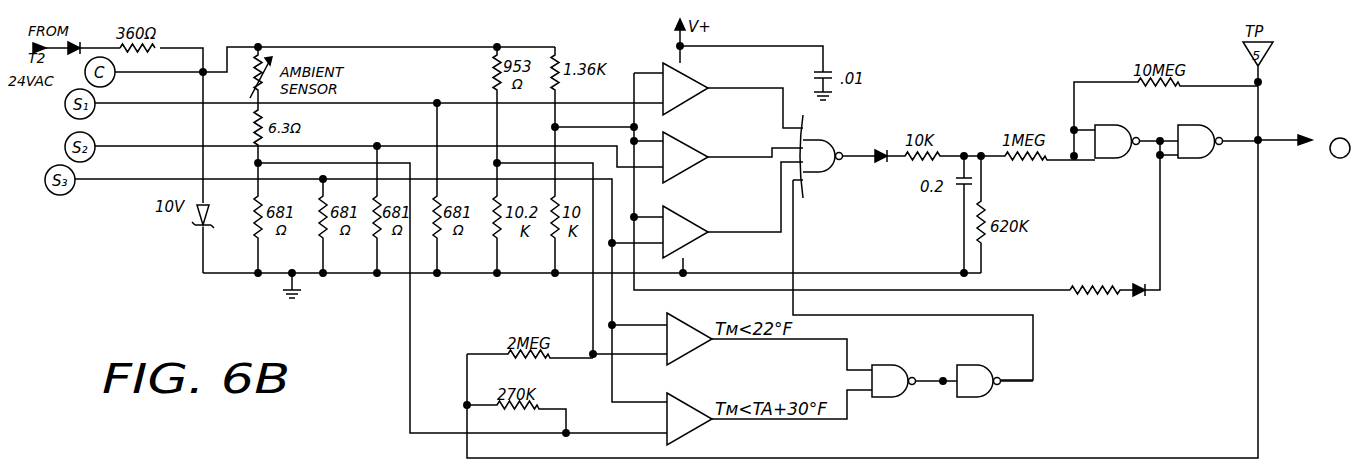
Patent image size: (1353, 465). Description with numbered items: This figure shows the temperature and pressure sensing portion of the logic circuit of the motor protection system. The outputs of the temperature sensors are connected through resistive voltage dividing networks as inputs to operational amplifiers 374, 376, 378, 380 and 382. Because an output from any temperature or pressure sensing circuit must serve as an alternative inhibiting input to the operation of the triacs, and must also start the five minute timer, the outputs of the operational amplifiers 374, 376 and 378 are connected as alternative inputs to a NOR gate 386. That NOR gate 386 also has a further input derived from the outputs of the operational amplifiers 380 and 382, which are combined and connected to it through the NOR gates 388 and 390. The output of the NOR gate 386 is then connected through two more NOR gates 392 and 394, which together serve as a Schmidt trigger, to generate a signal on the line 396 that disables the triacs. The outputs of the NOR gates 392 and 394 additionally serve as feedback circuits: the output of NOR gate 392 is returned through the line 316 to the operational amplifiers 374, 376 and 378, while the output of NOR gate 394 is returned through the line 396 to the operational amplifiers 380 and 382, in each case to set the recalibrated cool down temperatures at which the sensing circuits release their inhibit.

The operational amplifier 374 is at (688, 104).
The operational amplifier 376 is at (690, 172).
The operational amplifier 378 is at (693, 237).
The operational amplifier 380 is at (690, 352).
The operational amplifier 382 is at (692, 432).
The NOR gate 386 is at (830, 138).
The NOR gate 388 is at (895, 365).
The NOR gate 390 is at (975, 365).
The NOR gate 392 is at (1110, 160).
The NOR gate 394 is at (1200, 160).
The line 396 is at (1292, 142).
The line 316 is at (1160, 243).